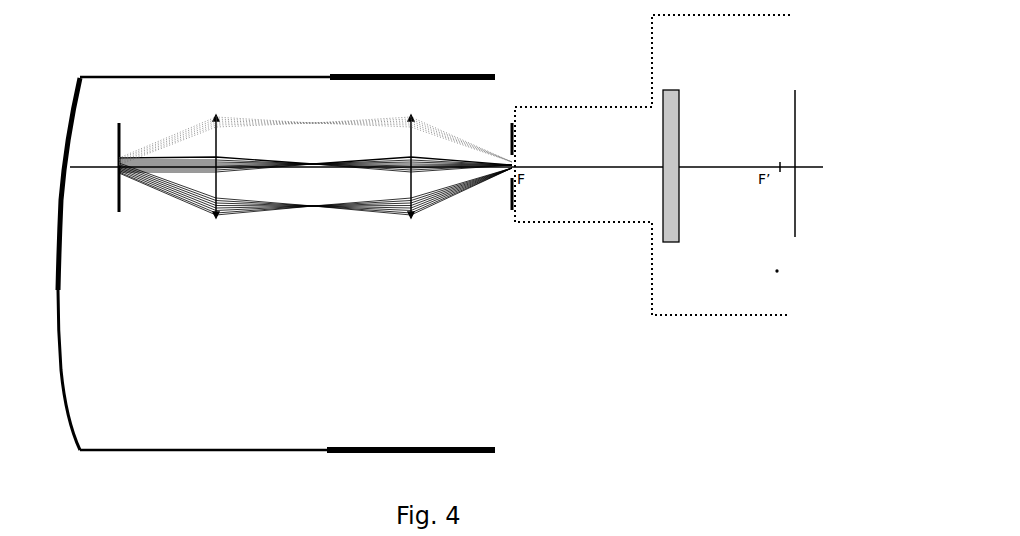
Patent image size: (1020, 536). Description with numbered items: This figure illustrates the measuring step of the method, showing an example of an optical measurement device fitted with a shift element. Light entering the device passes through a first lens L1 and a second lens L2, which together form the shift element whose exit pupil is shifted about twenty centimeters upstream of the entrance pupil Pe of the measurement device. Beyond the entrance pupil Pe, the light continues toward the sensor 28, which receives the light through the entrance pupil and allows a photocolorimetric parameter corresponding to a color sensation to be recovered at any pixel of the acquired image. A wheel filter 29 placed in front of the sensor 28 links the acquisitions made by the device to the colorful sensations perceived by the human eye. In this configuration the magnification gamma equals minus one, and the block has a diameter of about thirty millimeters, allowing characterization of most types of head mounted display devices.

The sensor 28 is at (795, 111).
The wheel filter 29 is at (672, 243).
The first lens L1 is at (217, 154).
The second lens L2 is at (411, 154).
The entrance pupil Pe is at (505, 150).